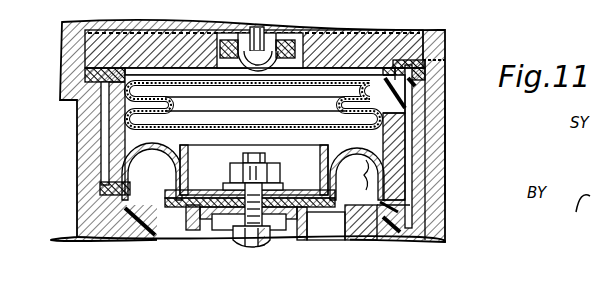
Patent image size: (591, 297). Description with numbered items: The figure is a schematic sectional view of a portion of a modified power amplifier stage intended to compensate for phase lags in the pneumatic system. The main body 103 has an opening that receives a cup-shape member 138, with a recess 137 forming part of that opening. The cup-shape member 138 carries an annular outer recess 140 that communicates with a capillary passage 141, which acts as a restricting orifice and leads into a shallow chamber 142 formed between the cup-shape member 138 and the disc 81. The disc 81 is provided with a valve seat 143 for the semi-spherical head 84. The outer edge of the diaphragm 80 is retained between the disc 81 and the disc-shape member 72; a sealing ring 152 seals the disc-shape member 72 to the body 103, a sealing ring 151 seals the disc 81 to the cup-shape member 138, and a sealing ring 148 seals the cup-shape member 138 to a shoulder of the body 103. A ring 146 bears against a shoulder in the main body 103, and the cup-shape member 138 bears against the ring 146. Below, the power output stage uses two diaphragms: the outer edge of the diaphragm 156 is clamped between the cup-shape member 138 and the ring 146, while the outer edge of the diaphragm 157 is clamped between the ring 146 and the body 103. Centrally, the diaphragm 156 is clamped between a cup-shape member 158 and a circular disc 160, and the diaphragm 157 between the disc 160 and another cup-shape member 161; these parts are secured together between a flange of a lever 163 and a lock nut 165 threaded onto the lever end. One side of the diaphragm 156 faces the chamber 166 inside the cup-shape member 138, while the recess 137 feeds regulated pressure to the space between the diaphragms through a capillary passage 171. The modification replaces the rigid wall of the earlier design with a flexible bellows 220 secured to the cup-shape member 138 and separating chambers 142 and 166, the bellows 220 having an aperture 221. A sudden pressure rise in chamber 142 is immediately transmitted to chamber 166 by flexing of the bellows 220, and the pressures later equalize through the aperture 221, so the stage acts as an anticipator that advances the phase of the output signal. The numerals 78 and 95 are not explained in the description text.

The disc-shape member 72 is at (444, 30).
The shallow chamber 142 is at (85, 36).
The valve seat 143 is at (315, 56).
The bolt 78 is at (262, 36).
The semi-spherical head 84 is at (276, 34).
The nut 95 is at (233, 32).
The chamber 166 is at (143, 137).
The annular outer recess 140 is at (407, 148).
The capillary passage 141 is at (407, 123).
The sealing ring 148 is at (432, 102).
The sealing ring 152 is at (440, 70).
The sealing ring 151 is at (440, 87).
The diaphragm 80 is at (413, 32).
The disc 81 is at (408, 50).
The main body 103 is at (443, 163).
The flexible bellows 220 is at (249, 86).
The aperture 221 is at (256, 86).
The diaphragm 156 is at (253, 171).
The cup-shape member 158 is at (186, 159).
The lock nut 165 is at (270, 178).
The cup-shape member 161 is at (280, 236).
The lever 163 is at (253, 246).
The diaphragm 157 is at (200, 222).
The circular disc 160 is at (337, 223).
The ring 146 is at (116, 212).
The recess 137 is at (405, 176).
The cup-shape member 138 is at (410, 195).
The capillary passage 171 is at (412, 215).